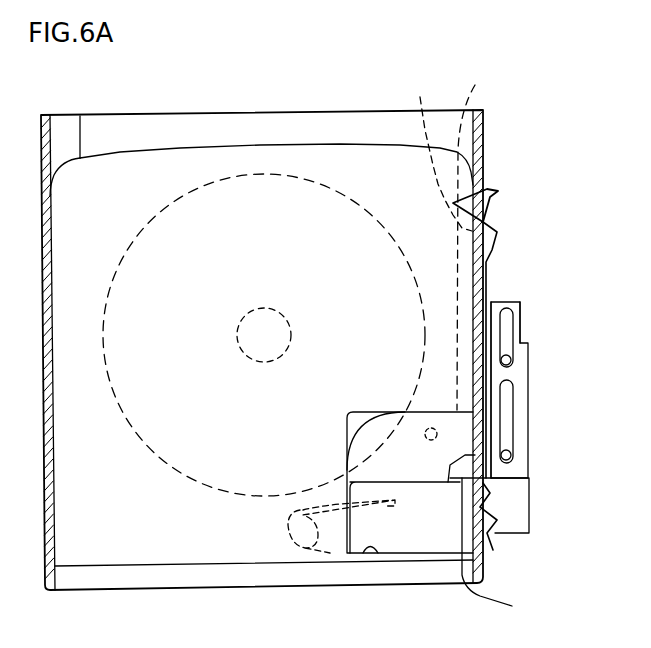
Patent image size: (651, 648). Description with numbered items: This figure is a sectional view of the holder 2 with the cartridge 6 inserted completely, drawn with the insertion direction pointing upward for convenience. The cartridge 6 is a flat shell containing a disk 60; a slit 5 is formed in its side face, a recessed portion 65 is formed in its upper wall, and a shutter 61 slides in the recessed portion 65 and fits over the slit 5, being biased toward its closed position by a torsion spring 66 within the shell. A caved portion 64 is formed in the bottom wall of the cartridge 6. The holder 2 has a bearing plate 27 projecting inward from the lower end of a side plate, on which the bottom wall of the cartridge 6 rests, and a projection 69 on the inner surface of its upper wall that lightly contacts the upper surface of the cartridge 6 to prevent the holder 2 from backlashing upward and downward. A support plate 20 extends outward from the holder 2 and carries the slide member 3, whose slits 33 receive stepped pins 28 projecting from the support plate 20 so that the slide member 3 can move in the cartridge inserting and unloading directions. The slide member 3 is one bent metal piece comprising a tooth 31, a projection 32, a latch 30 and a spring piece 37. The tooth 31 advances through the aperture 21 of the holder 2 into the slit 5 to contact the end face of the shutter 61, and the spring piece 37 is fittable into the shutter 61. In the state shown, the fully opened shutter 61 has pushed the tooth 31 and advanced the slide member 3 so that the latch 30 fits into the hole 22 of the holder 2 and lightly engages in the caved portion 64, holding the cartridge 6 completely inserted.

The holder 2 is at (483, 139).
The slide member 3 is at (493, 342).
The slit 5 is at (472, 236).
The cartridge 6 is at (320, 167).
The support plate 20 is at (520, 498).
The aperture 21 is at (478, 332).
The hole 22 is at (497, 233).
The bearing plate 27 is at (70, 140).
The pin 28 is at (511, 360).
The latch 30 is at (495, 195).
The tooth 31 is at (500, 552).
The projection 32 is at (490, 397).
The slits 33 is at (500, 436).
The spring piece 37 is at (497, 548).
The disk 60 is at (202, 180).
The shutter 61 is at (431, 537).
The caved portion 64 is at (432, 151).
The recessed portion 65 is at (378, 555).
The torsion spring 66 is at (303, 550).
The projection 69 is at (428, 428).